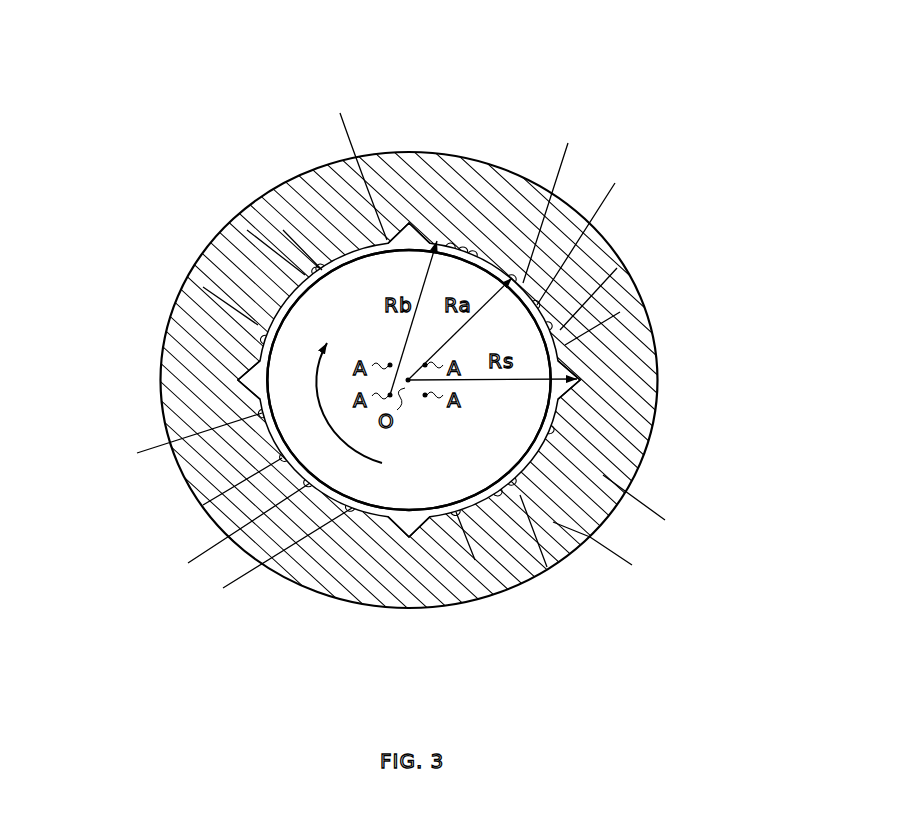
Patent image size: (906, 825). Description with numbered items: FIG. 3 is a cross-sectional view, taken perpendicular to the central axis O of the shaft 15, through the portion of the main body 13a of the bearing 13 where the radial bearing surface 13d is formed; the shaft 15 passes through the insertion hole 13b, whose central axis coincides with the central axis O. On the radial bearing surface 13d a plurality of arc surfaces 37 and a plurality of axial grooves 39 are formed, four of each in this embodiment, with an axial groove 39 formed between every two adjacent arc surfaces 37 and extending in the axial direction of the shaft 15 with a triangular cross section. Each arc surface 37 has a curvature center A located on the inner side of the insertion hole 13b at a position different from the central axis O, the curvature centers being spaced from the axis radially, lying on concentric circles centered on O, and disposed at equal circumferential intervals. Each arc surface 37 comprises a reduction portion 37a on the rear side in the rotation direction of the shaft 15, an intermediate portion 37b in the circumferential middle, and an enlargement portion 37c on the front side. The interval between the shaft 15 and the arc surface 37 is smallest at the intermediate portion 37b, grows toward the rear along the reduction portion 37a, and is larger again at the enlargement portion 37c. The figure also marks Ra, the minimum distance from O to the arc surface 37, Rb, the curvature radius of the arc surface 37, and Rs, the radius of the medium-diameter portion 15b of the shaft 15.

The bearing 13 is at (205, 60).
The main body 13a is at (164, 330).
The insertion hole 13b is at (467, 252).
The radial bearing surface 13d is at (455, 247).
The shaft 15 is at (377, 511).
The medium-diameter portion 15b is at (522, 433).
The arc surface 37 is at (283, 230).
The reduction portion 37a is at (203, 287).
The intermediate portion 37b is at (247, 230).
The enlargement portion 37c is at (508, 640).
The axial groove 39 is at (394, 238).